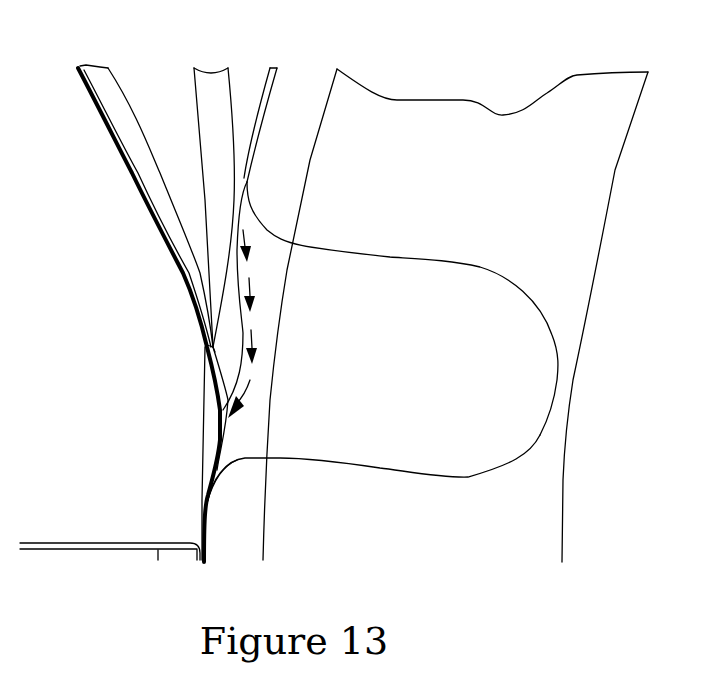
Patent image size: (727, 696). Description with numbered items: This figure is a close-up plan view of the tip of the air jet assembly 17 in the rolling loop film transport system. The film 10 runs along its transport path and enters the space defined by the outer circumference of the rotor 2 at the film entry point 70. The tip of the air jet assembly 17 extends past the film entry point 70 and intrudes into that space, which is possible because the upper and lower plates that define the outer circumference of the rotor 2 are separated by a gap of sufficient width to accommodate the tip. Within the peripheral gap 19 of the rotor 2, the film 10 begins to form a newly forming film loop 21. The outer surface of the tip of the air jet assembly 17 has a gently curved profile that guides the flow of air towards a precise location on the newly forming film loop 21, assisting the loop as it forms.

The rotor 2 is at (442, 123).
The film 10 is at (122, 137).
The air jet assembly 17 is at (204, 198).
The peripheral gap 19 is at (447, 462).
The newly forming film loop 21 is at (220, 440).
The film entry point 70 is at (203, 342).